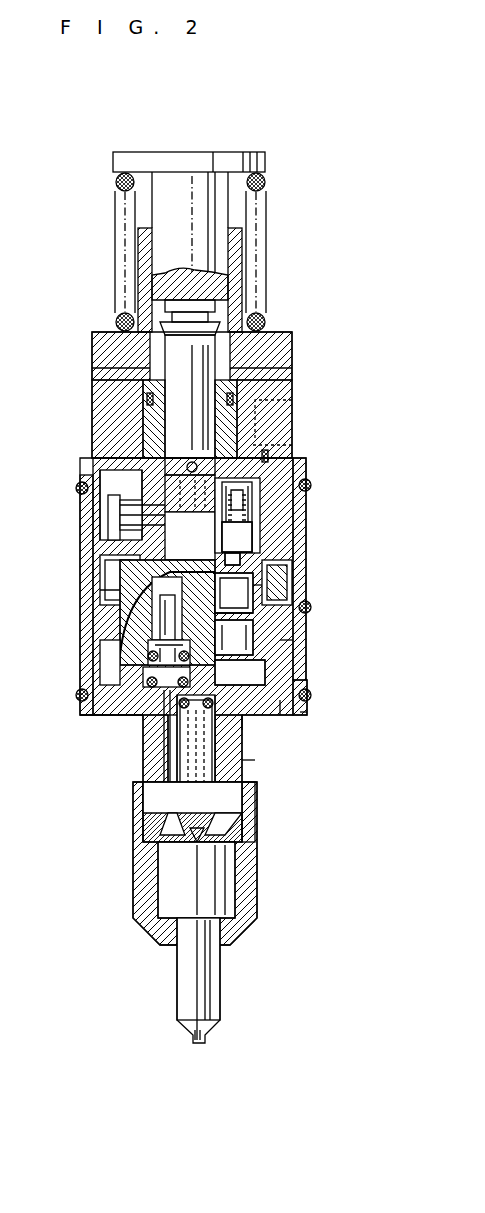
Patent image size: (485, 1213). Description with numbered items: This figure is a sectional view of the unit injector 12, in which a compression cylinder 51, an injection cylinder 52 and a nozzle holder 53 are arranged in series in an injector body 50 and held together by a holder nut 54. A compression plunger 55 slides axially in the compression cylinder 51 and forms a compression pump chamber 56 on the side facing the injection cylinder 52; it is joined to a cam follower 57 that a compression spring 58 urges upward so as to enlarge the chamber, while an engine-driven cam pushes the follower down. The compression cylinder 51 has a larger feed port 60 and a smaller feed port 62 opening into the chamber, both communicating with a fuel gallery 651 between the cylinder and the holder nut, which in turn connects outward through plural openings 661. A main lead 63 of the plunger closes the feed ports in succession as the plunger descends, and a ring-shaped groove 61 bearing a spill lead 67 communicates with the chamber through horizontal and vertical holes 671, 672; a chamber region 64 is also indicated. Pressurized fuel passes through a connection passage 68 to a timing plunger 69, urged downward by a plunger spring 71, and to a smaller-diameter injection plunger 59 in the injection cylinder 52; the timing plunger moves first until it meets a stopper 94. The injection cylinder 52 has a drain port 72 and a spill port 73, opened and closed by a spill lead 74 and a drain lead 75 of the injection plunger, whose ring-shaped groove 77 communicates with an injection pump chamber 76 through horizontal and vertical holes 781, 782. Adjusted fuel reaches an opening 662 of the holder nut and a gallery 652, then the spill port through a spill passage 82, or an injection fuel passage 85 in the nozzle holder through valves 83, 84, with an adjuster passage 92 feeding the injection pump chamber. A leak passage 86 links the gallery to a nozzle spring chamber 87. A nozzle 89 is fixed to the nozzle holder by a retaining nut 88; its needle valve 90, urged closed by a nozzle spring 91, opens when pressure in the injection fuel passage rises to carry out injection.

The unit injector 12 is at (286, 197).
The injector body 50 is at (105, 345).
The compression cylinder 51 is at (150, 395).
The injection cylinder 52 is at (120, 628).
The nozzle holder 53 is at (196, 786).
The holder nut 54 is at (132, 712).
The compression plunger 55 is at (210, 345).
The compression pump chamber 56 is at (235, 540).
The cam follower 57 is at (206, 162).
The compression spring 58 is at (266, 246).
The injection plunger 59 is at (253, 605).
The feed port 60 is at (108, 522).
The ring-shaped groove 61 is at (190, 470).
The feed port 62 is at (115, 552).
The main lead 63 is at (76, 490).
The chamber 64 is at (175, 440).
The spill lead 67 is at (96, 474).
The connection passage 68 is at (285, 575).
The timing plunger 69 is at (245, 560).
The plunger spring 71 is at (296, 484).
The drain port 72 is at (292, 630).
The spill port 73 is at (268, 668).
The spill lead 74 is at (275, 650).
The drain lead 75 is at (265, 590).
The injection pump chamber 76 is at (250, 716).
The ring-shaped groove 77 is at (296, 650).
The spill passage 82 is at (310, 695).
The valve 83 is at (148, 652).
The adjuster valve 84 is at (122, 690).
The injection fuel passage 85 is at (164, 760).
The leak passage 86 is at (246, 770).
The nozzle spring chamber 87 is at (232, 836).
The retaining nut 88 is at (248, 905).
The nozzle 89 is at (207, 988).
The needle valve 90 is at (212, 852).
The nozzle spring 91 is at (215, 828).
The adjuster passage 92 is at (244, 735).
The stopper 94 is at (248, 506).
The fuel gallery 651 is at (110, 568).
The gallery 652 is at (92, 705).
The openings 661 is at (110, 592).
The opening 662 is at (100, 670).
The horizontal hole 671 is at (250, 435).
The vertical hole 672 is at (252, 465).
The horizontal hole 781 is at (302, 712).
The vertical hole 782 is at (280, 716).